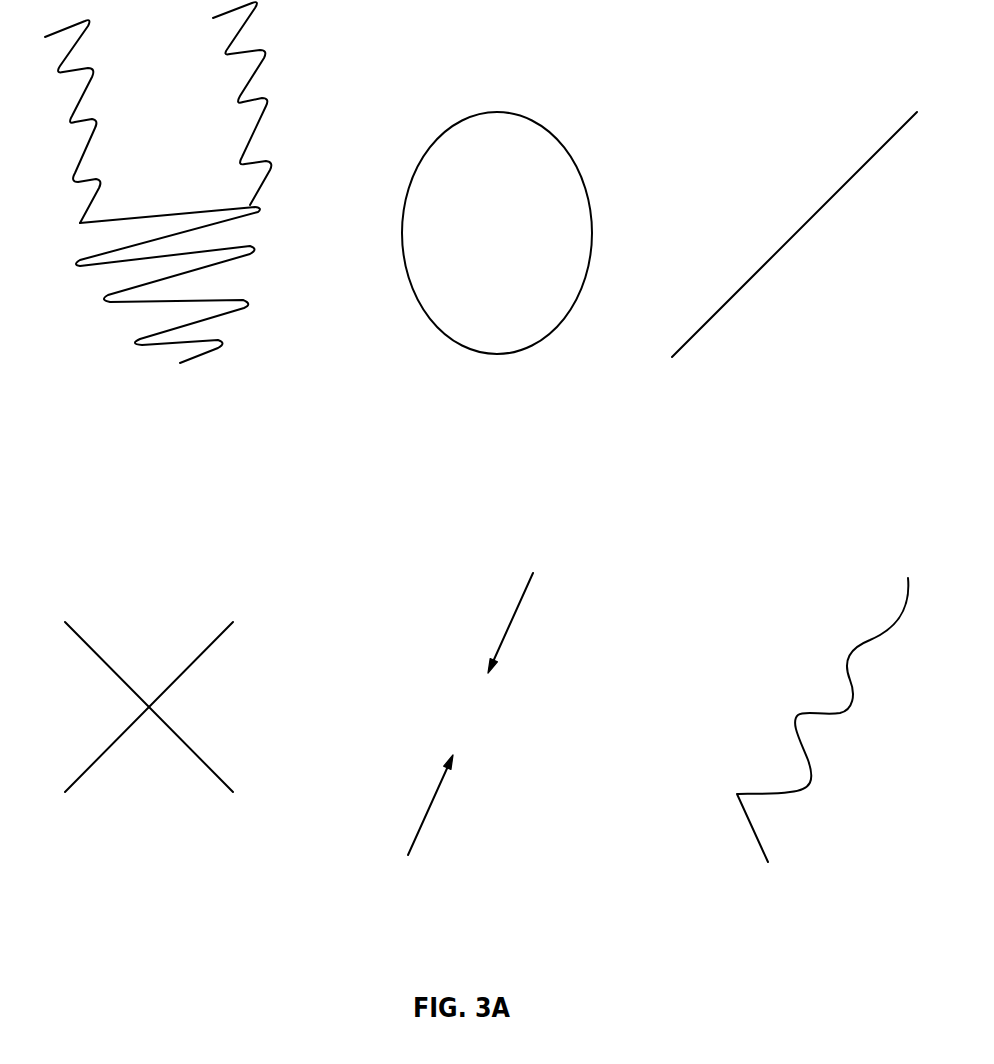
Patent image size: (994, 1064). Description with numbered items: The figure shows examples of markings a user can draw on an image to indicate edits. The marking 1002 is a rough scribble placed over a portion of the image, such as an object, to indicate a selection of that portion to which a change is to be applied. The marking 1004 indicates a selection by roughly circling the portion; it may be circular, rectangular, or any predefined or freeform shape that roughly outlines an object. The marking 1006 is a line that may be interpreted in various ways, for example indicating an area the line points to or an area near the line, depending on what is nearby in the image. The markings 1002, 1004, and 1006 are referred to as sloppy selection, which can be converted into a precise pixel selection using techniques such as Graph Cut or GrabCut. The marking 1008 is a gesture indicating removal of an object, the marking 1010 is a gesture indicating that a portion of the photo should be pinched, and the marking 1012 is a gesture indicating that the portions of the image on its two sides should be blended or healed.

The marking 1002 is at (197, 358).
The marking 1004 is at (497, 355).
The marking 1006 is at (772, 258).
The marking 1008 is at (202, 763).
The marking 1010 is at (513, 622).
The marking 1012 is at (758, 842).